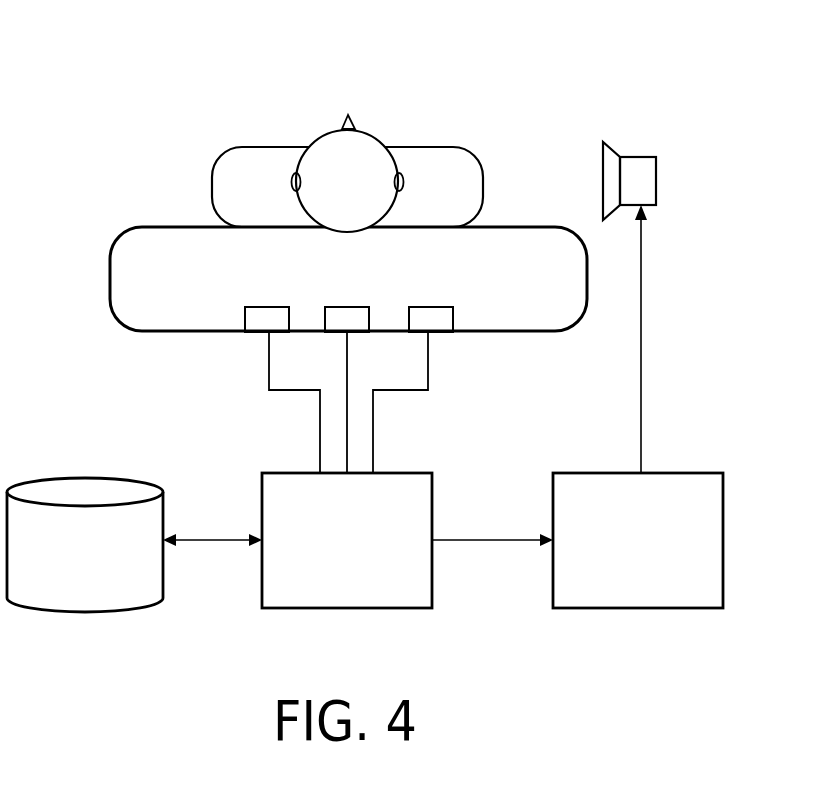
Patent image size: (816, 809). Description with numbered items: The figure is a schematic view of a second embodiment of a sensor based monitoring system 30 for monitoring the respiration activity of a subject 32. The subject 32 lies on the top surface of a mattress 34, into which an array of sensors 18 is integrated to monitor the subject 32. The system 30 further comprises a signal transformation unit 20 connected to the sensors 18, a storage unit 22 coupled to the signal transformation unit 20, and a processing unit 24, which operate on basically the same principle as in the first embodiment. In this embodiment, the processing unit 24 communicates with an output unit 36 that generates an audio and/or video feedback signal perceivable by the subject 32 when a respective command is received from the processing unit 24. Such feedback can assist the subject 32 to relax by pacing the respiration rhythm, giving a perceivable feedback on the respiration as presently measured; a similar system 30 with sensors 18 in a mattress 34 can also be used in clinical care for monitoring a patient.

The system 30 is at (104, 99).
The subject 32 is at (452, 160).
The mattress 34 is at (172, 333).
The sensors 18 is at (437, 318).
The signal transformation unit 20 is at (332, 556).
The storage unit 22 is at (71, 556).
The processing unit 24 is at (624, 556).
The output unit 36 is at (634, 166).